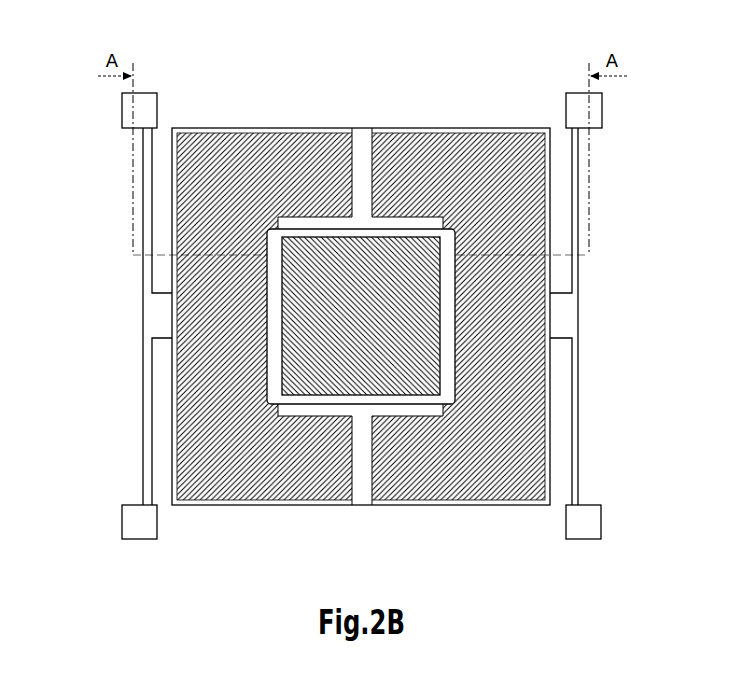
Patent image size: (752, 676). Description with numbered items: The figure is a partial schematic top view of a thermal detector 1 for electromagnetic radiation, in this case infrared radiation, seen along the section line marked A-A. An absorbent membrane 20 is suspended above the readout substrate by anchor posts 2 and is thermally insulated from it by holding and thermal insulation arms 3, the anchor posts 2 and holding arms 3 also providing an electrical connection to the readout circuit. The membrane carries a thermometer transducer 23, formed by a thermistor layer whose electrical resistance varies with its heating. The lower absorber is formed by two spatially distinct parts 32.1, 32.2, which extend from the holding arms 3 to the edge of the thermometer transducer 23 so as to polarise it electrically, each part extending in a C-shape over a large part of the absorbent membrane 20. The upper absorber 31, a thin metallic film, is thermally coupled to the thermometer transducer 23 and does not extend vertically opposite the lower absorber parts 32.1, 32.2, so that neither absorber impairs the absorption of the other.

The thermal detector 1 is at (90, 130).
The anchor posts 2 is at (606, 110).
The holding and thermal insulation arms 3 is at (584, 398).
The absorbent membrane 20 is at (309, 112).
The thermometer transducer 23 is at (362, 226).
The upper absorber 31 is at (360, 404).
The first part of the lower absorber 32.1 is at (239, 506).
The second part of the lower absorber 32.2 is at (464, 506).